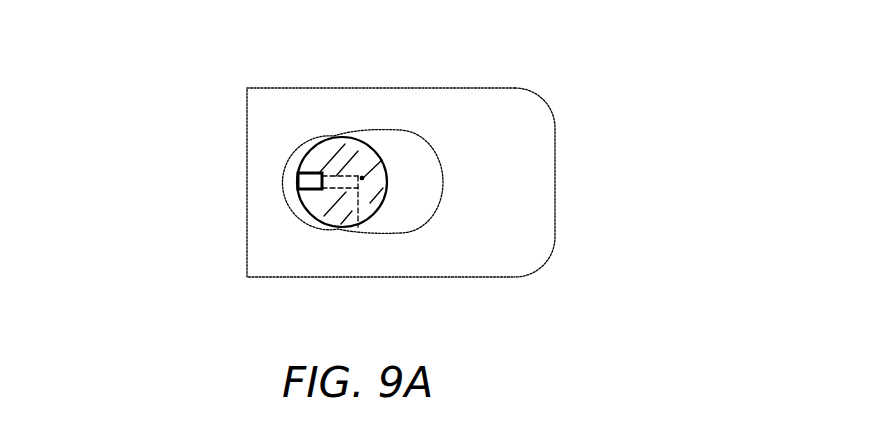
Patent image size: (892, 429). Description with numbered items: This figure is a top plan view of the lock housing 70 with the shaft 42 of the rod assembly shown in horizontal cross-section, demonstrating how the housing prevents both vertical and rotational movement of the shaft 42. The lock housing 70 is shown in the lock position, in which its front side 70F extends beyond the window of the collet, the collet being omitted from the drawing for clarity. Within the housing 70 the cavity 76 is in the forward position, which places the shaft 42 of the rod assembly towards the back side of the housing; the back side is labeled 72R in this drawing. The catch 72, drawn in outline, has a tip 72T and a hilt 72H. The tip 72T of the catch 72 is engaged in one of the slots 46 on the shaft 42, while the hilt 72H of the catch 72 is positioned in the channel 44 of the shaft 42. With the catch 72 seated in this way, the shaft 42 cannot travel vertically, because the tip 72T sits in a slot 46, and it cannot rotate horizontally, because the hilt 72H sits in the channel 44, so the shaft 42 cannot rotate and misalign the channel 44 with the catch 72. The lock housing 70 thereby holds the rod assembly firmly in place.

The lock housing 70 is at (541, 70).
The front side 70F is at (555, 187).
The catch 72 is at (333, 176).
The retainer body 72R is at (247, 236).
The hilt 72H is at (297, 185).
The tip 72T is at (357, 227).
The cavity 76 is at (420, 138).
The shaft 42 is at (383, 207).
The channel 44 is at (300, 172).
The slots 46 is at (362, 178).